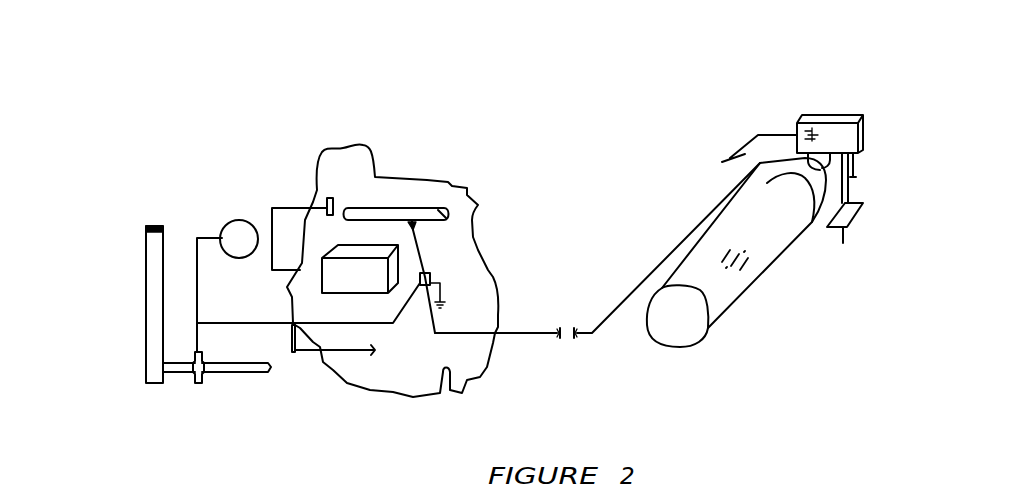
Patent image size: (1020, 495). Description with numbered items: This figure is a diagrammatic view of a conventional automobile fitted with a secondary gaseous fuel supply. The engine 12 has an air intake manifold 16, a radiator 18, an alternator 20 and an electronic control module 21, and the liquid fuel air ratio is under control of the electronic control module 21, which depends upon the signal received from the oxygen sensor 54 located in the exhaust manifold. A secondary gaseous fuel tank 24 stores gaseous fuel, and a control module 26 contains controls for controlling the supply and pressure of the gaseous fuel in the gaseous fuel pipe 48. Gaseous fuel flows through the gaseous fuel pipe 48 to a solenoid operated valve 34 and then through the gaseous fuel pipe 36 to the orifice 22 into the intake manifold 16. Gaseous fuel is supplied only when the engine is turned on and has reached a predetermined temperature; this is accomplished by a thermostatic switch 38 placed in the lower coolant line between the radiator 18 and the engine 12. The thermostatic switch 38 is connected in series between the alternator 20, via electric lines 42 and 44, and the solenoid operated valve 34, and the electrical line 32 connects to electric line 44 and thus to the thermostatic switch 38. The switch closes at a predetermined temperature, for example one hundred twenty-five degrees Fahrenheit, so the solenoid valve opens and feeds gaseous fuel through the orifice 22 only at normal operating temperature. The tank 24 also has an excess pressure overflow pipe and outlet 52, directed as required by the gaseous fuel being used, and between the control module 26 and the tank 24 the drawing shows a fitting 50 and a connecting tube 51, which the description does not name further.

The engine 12 is at (399, 370).
The air intake manifold 16 is at (360, 212).
The radiator 18 is at (152, 277).
The alternator 20 is at (235, 233).
The electronic control module 21 is at (357, 275).
The orifice 22 is at (423, 217).
The secondary gaseous fuel tank 24 is at (717, 292).
The control module 26 is at (820, 115).
The electrical line 32 is at (298, 352).
The solenoid operated valve 34 is at (430, 280).
The gaseous fuel pipe 36 is at (419, 255).
The thermostatic switch 38 is at (201, 375).
The electric line 42 is at (197, 295).
The electric line 44 is at (255, 323).
The gaseous fuel pipe 48 is at (517, 333).
The pressure regulator 50 is at (855, 165).
The connecting tube 51 is at (827, 170).
The excess pressure overflow pipe and outlet 52 is at (843, 240).
The oxygen sensor 54 is at (327, 203).